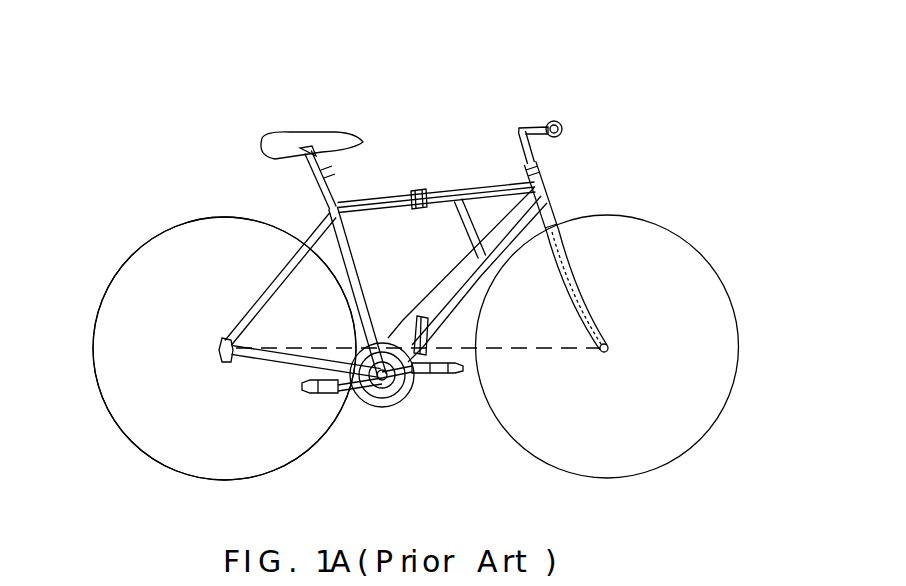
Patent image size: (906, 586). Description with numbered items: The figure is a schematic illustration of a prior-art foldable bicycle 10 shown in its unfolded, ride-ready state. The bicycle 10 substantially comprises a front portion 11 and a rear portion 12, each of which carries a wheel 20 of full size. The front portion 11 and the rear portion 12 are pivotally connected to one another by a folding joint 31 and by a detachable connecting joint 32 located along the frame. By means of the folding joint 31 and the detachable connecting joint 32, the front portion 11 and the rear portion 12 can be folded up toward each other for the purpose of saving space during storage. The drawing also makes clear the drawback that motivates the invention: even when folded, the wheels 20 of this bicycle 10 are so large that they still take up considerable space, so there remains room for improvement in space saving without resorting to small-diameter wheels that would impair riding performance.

The bicycle 10 is at (433, 277).
The front portion 11 is at (716, 198).
The rear portion 12 is at (105, 448).
The wheel 20 is at (227, 453).
The folding joint 31 is at (447, 340).
The detachable connecting joint 32 is at (412, 177).